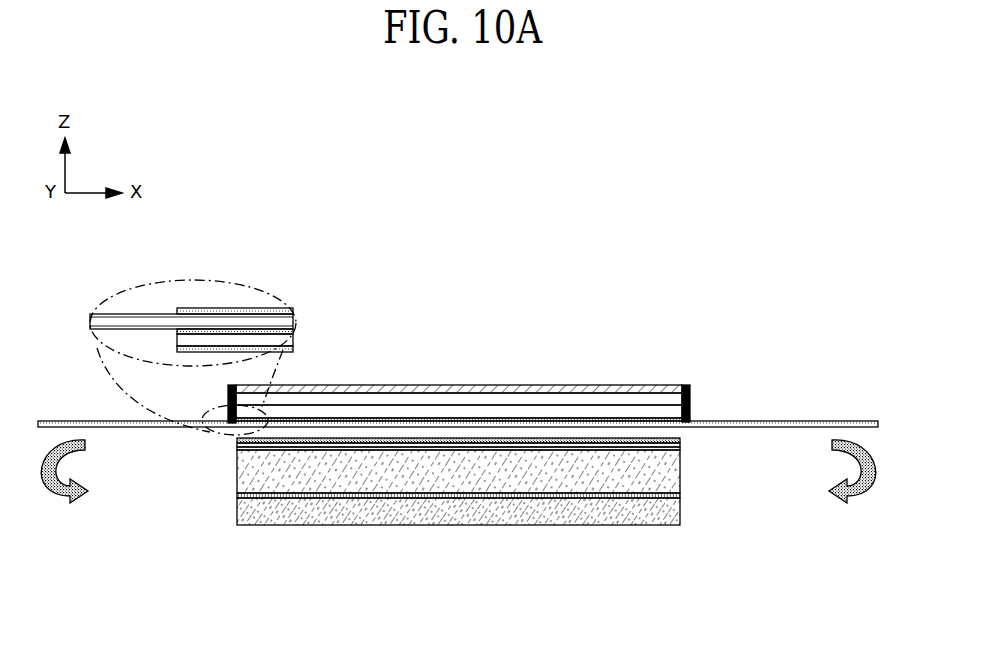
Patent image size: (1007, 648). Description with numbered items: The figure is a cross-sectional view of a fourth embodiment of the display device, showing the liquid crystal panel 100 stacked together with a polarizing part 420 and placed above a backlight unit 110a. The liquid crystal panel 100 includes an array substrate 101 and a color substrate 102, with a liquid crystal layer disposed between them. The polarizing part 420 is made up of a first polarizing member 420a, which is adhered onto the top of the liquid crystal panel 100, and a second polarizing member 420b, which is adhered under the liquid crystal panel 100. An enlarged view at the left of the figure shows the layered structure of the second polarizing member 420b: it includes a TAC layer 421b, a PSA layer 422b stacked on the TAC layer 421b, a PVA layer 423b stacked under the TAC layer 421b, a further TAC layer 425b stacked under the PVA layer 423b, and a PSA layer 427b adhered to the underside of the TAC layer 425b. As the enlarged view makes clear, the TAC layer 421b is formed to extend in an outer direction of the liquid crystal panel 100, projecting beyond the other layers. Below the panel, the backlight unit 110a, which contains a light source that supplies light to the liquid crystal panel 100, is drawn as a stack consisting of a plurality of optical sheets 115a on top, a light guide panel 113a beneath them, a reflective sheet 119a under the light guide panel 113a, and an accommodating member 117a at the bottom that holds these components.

The liquid crystal panel 100 is at (459, 349).
The array substrate 101 is at (498, 322).
The color substrate 102 is at (487, 400).
The polarizing part 420 is at (459, 361).
The first polarizing member 420a is at (557, 389).
The second polarizing member 420b is at (622, 422).
The TAC layer 421b is at (145, 322).
The PSA layer 422b is at (197, 312).
The PVA layer 423b is at (293, 332).
The TAC layer 425b is at (277, 339).
The PSA layer 427b is at (210, 349).
The backlight unit 110a is at (528, 485).
The optical sheets 115a is at (668, 443).
The light guide panel 113a is at (662, 470).
The reflective sheet 119a is at (668, 496).
The accommodating member 117a is at (662, 514).